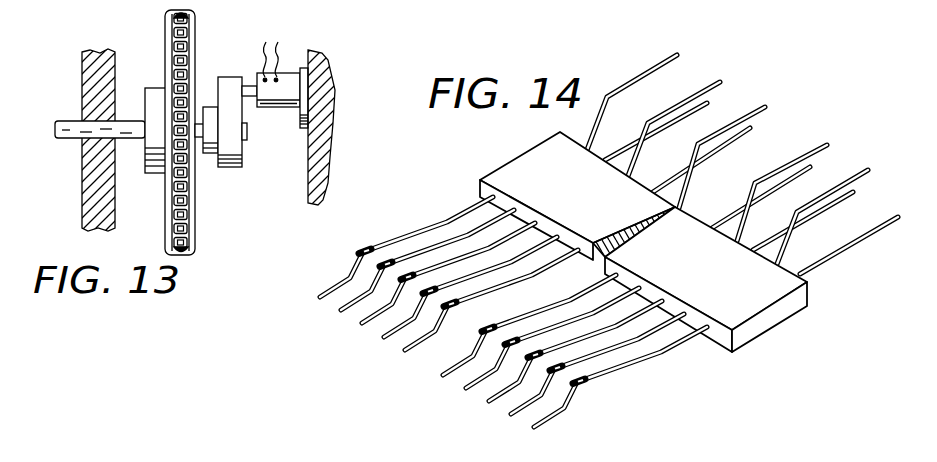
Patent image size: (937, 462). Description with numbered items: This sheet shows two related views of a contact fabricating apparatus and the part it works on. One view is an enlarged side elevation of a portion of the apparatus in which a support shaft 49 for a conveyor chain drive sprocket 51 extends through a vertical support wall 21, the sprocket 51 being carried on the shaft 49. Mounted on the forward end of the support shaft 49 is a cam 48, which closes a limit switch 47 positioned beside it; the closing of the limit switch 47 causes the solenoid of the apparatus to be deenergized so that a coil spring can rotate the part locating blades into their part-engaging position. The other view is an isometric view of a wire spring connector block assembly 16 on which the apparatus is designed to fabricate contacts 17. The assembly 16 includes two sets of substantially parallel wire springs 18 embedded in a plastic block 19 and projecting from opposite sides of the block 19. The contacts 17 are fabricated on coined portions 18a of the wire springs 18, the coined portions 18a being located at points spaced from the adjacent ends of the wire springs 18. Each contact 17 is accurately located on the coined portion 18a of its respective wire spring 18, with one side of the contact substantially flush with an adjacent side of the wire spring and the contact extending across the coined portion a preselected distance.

In FIG. 14, the wire spring connector block assembly 16 is at (602, 249).
In FIG. 14, the contacts 17 is at (377, 262).
In FIG. 14, the wire springs 18 is at (467, 230).
In FIG. 14, the coined portions 18a is at (412, 277).
In FIG. 14, the plastic block 19 is at (548, 158).
In FIG. 13, the vertical support wall 21 is at (106, 63).
In FIG. 13, the limit switch 47 is at (277, 98).
In FIG. 13, the cam 48 is at (232, 168).
In FIG. 13, the support shaft 49 is at (75, 127).
In FIG. 13, the conveyor chain drive sprocket 51 is at (183, 197).